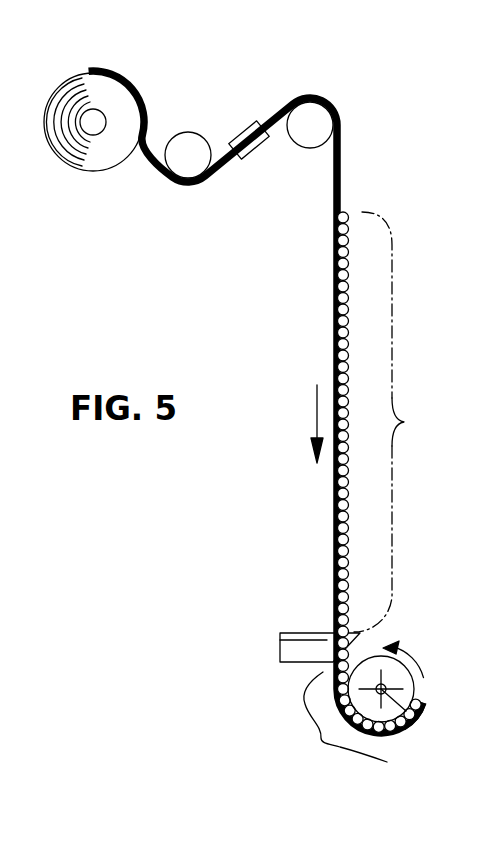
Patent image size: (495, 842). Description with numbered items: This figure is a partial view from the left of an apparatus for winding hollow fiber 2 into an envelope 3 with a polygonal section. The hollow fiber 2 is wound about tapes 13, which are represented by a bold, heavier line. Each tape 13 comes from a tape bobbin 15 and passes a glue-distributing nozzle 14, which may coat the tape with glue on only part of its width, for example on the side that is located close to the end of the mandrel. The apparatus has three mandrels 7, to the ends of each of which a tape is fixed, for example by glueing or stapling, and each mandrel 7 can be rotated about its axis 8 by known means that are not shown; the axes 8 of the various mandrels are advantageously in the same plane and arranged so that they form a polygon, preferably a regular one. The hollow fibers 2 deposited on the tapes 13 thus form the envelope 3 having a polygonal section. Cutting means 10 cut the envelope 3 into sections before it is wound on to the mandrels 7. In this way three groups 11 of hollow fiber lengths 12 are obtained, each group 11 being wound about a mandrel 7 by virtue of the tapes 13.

The hollow fiber 2 is at (352, 307).
The envelope 3 is at (393, 422).
The mandrel 7 is at (397, 677).
The axis 8 is at (422, 717).
The cutting means 10 is at (315, 633).
The group of hollow fiber lengths 11 is at (322, 739).
The hollow fiber length 12 is at (366, 740).
The tape 13 is at (342, 157).
The glue-distributing nozzle 14 is at (233, 128).
The tape bobbin 15 is at (102, 86).